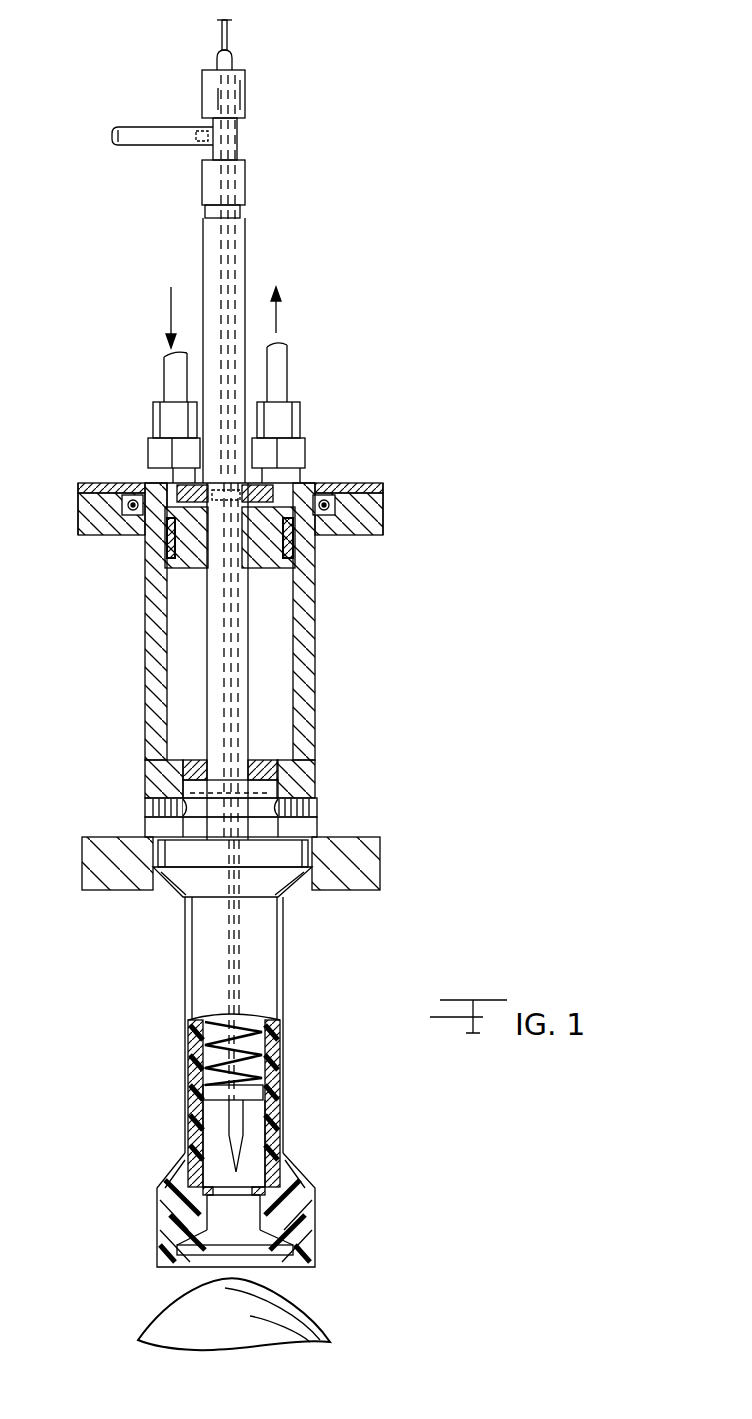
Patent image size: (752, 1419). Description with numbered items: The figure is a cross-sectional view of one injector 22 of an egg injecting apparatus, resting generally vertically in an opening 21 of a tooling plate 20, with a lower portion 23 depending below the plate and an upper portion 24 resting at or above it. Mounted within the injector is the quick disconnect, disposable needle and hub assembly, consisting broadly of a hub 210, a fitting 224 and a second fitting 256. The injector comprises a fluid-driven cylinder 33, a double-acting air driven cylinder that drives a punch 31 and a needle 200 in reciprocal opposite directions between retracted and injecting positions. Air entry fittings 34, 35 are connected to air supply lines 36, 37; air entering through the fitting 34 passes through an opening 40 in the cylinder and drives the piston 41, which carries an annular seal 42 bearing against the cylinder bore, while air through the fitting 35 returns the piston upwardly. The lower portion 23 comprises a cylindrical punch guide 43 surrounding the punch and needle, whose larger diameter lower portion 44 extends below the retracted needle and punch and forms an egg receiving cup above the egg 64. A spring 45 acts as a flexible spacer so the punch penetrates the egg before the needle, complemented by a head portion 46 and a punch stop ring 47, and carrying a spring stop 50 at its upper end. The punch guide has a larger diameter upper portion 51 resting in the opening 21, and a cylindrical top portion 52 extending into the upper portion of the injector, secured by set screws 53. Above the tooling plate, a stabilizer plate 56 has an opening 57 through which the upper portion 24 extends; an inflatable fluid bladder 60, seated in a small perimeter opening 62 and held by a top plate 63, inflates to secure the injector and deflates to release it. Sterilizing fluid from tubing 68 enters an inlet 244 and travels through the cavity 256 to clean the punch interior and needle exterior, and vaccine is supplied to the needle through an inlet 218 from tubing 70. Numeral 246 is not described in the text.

The tooling plate 20 is at (367, 863).
The opening 21 is at (298, 895).
The injector 22 is at (372, 647).
The lower portion 23 is at (337, 957).
The upper portion 24 is at (130, 668).
The punch 31 is at (240, 1143).
The fluid-driven cylinder 33 is at (305, 590).
The air entry fitting 34 is at (157, 420).
The air entry fitting 35 is at (295, 420).
The air supply line 36 is at (164, 366).
The air supply line 37 is at (287, 368).
The opening 40 is at (166, 478).
The piston 41 is at (187, 558).
The annular seal 42 is at (293, 542).
The punch guide 43 is at (280, 1053).
The lower portion 44 is at (317, 1207).
The spring 45 is at (200, 1053).
The head portion 46 is at (207, 1093).
The punch stop ring 47 is at (203, 1200).
The spring stop 50 is at (183, 896).
The upper portion 51 is at (153, 893).
The top portion of the punch guide 52 is at (280, 790).
The set screws 53 is at (145, 815).
The stabilizer plate 56 is at (384, 510).
The opening 57 is at (317, 487).
The inflatable fluid bladder 60 is at (125, 516).
The small perimeter opening 62 is at (128, 496).
The top plate 63 is at (358, 490).
The egg 64 is at (290, 1310).
The tubing 68 is at (146, 146).
The tubing 70 is at (229, 35).
The needle 200 is at (287, 1100).
The hub 210 is at (252, 92).
The inlet 218 is at (233, 60).
The fitting 224 is at (244, 135).
The inlet 244 is at (196, 128).
The lower block 246 is at (250, 228).
The second fitting 256 is at (233, 272).